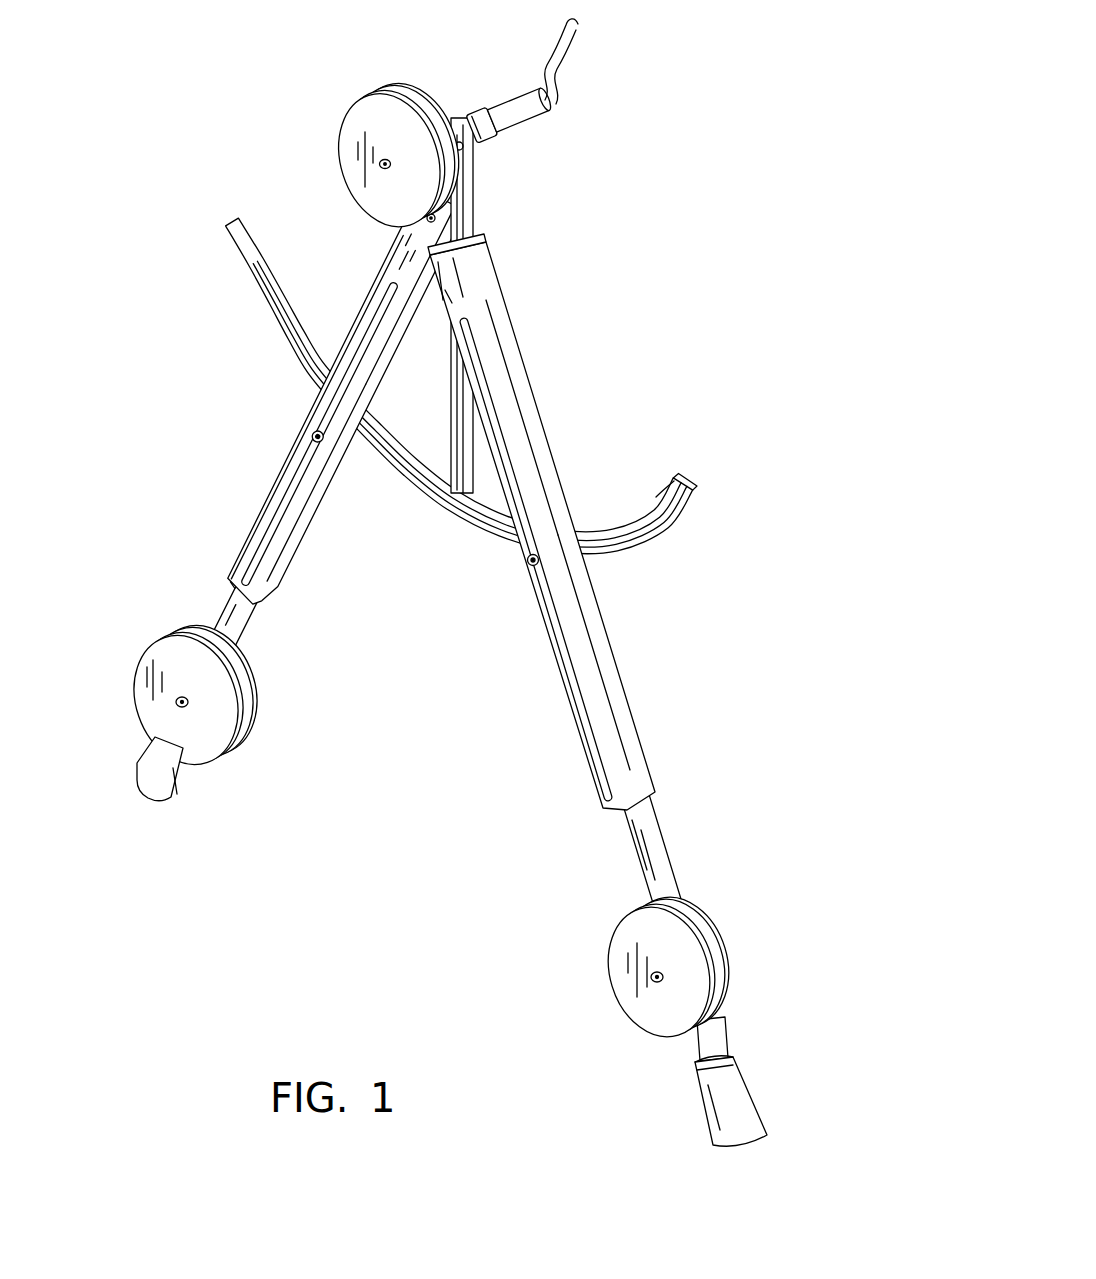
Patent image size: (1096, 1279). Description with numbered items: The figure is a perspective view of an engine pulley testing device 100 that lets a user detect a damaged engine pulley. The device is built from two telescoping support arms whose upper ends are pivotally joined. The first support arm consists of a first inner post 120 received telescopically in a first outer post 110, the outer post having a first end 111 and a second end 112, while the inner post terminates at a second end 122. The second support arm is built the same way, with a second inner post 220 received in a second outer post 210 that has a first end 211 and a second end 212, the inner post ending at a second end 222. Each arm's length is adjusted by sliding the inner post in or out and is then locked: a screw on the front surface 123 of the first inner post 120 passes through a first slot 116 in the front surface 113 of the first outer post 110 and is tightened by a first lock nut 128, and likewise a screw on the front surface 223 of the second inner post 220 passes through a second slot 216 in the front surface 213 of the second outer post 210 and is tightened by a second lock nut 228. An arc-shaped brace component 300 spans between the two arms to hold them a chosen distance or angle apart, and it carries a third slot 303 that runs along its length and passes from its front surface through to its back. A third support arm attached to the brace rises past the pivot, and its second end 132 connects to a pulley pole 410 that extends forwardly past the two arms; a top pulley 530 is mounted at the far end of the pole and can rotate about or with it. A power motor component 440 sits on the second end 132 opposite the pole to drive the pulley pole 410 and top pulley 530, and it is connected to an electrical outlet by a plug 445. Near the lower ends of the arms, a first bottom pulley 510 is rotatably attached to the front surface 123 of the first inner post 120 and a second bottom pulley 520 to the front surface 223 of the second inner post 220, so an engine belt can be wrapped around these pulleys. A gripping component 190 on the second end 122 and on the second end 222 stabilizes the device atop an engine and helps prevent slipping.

The engine pulley testing device 100 is at (737, 208).
The first outer post 110 is at (298, 435).
The first end of the first outer post 111 is at (402, 232).
The second end of the first outer post 112 is at (227, 577).
The front surface of the first outer post 113 is at (372, 305).
The first slot 116 is at (277, 500).
The first inner post 120 is at (258, 626).
The second end of the first inner post 122 is at (186, 766).
The front surface of the first inner post 123 is at (238, 662).
The first lock nut 128 is at (308, 427).
The second end of the third support arm 132 is at (480, 168).
The gripping component 190 is at (165, 800).
The second outer post 210 is at (620, 681).
The first end of the second outer post 211 is at (489, 272).
The second end of the second outer post 212 is at (648, 778).
The front surface of the second outer post 213 is at (465, 297).
The second slot 216 is at (508, 473).
The second inner post 220 is at (683, 893).
The second end of the second inner post 222 is at (693, 1047).
The front surface of the second inner post 223 is at (623, 828).
The second lock nut 228 is at (533, 587).
The arc-shaped brace component 300 is at (373, 455).
The third slot 303 is at (655, 493).
The pulley pole 410 is at (450, 120).
The power motor component 440 is at (481, 110).
The plug 445 is at (560, 80).
The first bottom pulley 510 is at (143, 658).
The second bottom pulley 520 is at (622, 952).
The top pulley 530 is at (357, 110).